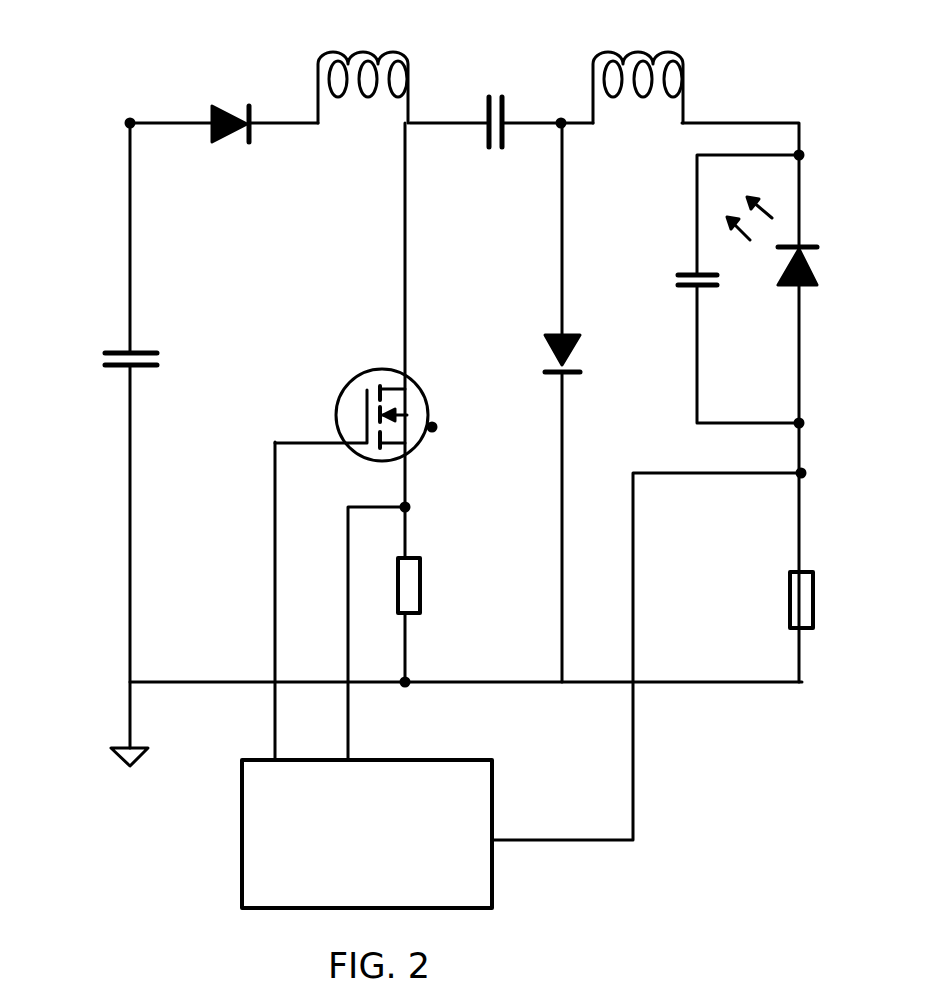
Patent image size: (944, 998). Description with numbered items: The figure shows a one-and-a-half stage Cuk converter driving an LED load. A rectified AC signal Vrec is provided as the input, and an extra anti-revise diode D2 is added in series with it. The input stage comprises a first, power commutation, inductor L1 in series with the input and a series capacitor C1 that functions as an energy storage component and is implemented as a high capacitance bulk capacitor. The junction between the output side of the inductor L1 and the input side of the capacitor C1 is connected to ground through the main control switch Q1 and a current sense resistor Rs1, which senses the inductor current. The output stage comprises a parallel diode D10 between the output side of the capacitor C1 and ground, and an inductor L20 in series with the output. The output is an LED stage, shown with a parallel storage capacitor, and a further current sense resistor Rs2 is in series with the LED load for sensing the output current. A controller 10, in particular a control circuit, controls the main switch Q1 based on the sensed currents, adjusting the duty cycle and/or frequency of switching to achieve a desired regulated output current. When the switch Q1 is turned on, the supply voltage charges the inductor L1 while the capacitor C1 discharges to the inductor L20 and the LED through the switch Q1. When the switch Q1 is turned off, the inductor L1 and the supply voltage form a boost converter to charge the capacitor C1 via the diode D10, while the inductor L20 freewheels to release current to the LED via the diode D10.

The controller 10 is at (492, 883).
The rectified AC signal Vrec is at (95, 358).
The anti-revise diode D2 is at (234, 103).
The first inductor L1 is at (363, 65).
The series capacitor C1 is at (498, 100).
The inductor L20 is at (638, 69).
The parallel diode D10 is at (524, 353).
The main control switch Q1 is at (355, 393).
The current sense resistor Rs1 is at (440, 585).
The further current sense resistor Rs2 is at (770, 600).
The LED stage LED is at (808, 263).